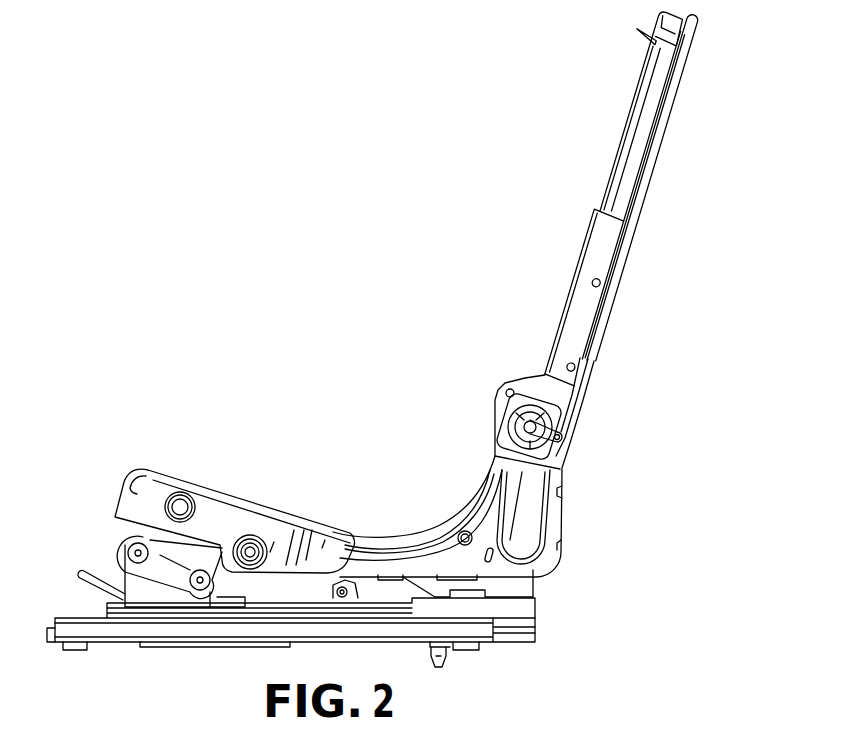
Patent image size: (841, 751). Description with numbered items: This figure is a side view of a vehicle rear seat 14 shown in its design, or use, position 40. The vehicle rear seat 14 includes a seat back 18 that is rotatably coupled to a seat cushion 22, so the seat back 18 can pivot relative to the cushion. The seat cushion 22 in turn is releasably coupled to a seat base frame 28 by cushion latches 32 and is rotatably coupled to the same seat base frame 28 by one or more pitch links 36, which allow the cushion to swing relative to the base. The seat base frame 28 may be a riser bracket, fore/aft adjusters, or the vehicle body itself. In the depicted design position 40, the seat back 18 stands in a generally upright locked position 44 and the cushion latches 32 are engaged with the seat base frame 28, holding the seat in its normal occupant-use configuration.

The vehicle rear seat 14 is at (247, 160).
The seat back 18 is at (622, 192).
The seat cushion 22 is at (232, 510).
The seat base frame 28 is at (512, 610).
The cushion latches 32 is at (490, 590).
The pitch links 36 is at (133, 530).
The design position 40 is at (667, 370).
The upright locked position 44 is at (667, 147).